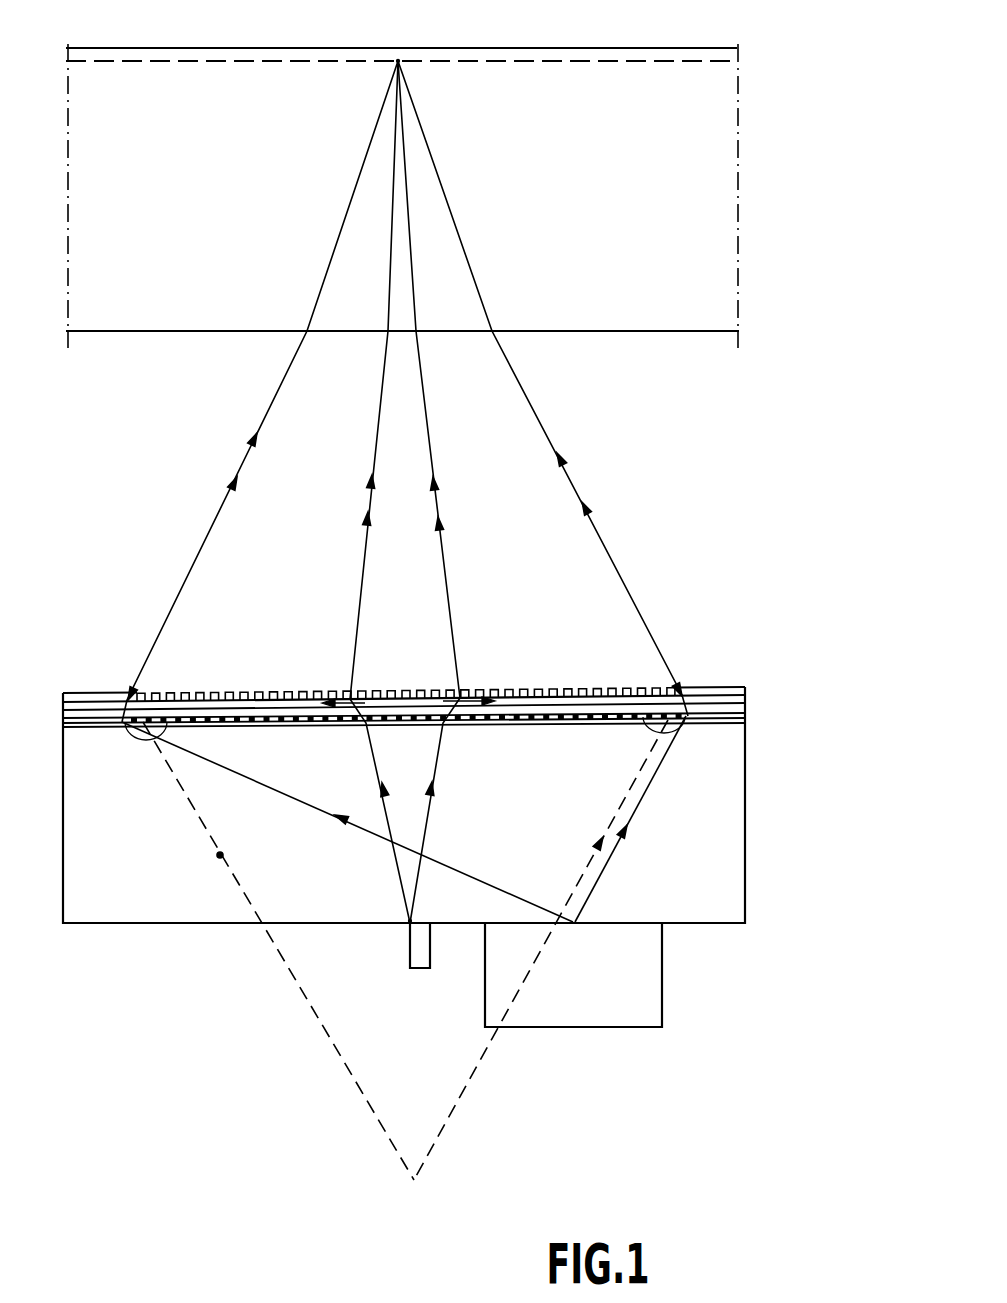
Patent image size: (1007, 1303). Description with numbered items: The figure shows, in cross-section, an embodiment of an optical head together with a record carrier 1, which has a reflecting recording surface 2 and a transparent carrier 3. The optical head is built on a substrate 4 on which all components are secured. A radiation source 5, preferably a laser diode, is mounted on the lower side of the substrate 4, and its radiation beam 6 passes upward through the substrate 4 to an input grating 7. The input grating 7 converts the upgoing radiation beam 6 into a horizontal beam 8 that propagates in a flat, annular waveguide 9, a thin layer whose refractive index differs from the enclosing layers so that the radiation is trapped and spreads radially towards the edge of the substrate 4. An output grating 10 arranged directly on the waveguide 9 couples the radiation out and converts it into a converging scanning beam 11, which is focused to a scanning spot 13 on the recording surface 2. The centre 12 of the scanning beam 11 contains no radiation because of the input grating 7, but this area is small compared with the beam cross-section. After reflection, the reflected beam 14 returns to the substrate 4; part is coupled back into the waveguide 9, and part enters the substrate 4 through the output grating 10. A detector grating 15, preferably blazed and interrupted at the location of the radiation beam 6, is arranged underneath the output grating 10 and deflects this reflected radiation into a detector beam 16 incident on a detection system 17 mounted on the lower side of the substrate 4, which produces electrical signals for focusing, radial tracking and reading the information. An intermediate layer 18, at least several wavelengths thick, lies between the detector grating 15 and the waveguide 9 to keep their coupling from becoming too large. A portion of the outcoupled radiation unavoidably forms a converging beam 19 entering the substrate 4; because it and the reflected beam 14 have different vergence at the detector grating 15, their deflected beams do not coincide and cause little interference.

The record carrier 1 is at (787, 35).
The reflecting recording surface 2 is at (698, 62).
The transparent carrier 3 is at (720, 268).
The substrate 4 is at (732, 872).
The radiation source 5 is at (426, 957).
The radiation beam 6 is at (402, 903).
The input grating 7 is at (404, 688).
The horizontal beam 8 is at (335, 698).
The waveguide 9 is at (86, 705).
The output grating 10 is at (160, 695).
The scanning beam 11 is at (560, 452).
The centre of the scanning beam 12 is at (412, 395).
The scanning spot 13 is at (398, 60).
The reflected beam 14 is at (585, 501).
The detector grating 15 is at (145, 741).
The detector beam 16 is at (264, 786).
The detection system 17 is at (652, 975).
The intermediate layer 18 is at (733, 706).
The converging beam 19 is at (280, 955).